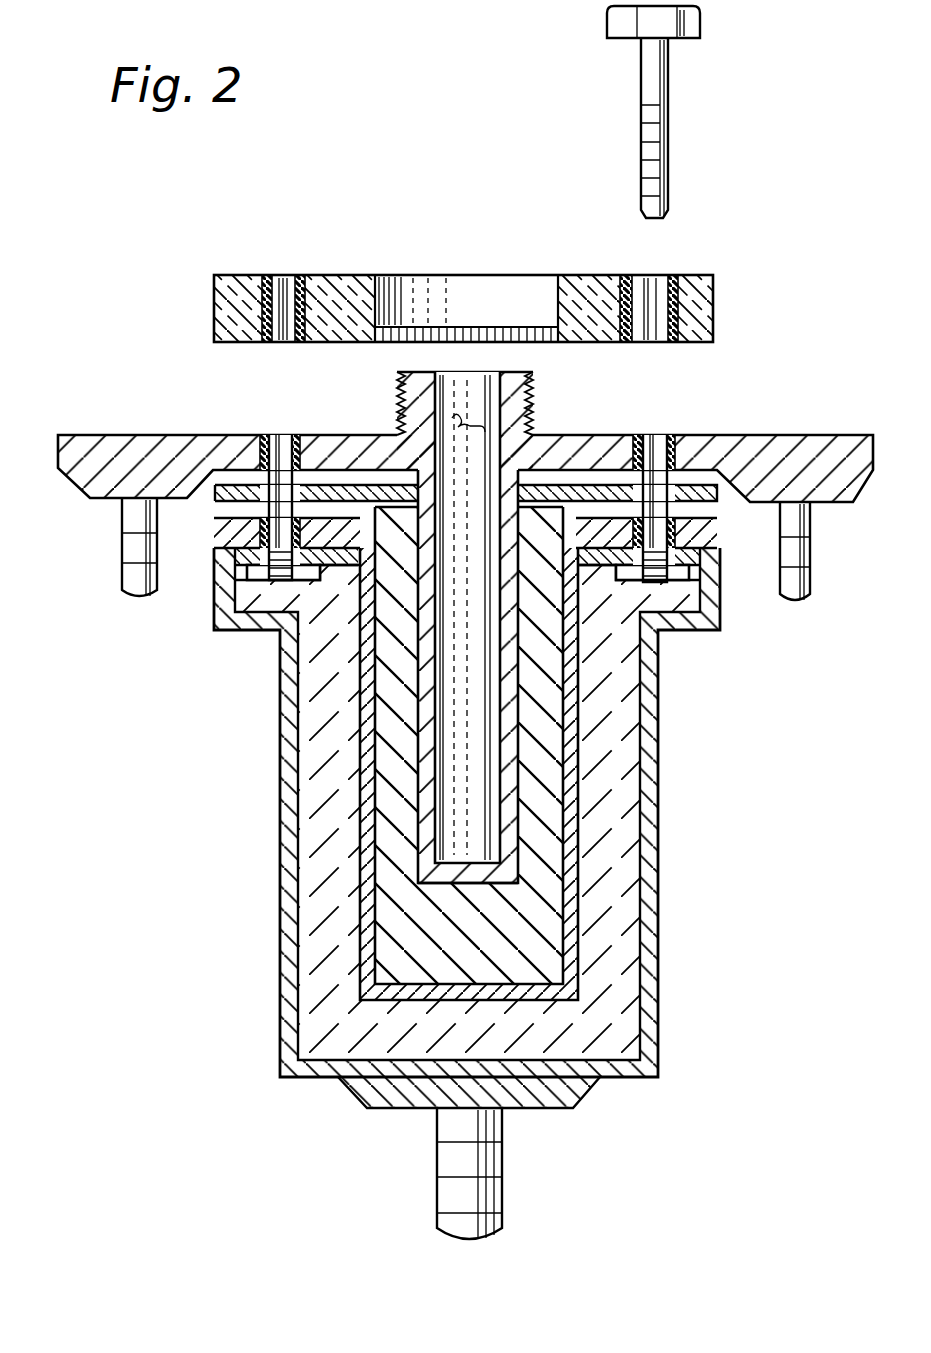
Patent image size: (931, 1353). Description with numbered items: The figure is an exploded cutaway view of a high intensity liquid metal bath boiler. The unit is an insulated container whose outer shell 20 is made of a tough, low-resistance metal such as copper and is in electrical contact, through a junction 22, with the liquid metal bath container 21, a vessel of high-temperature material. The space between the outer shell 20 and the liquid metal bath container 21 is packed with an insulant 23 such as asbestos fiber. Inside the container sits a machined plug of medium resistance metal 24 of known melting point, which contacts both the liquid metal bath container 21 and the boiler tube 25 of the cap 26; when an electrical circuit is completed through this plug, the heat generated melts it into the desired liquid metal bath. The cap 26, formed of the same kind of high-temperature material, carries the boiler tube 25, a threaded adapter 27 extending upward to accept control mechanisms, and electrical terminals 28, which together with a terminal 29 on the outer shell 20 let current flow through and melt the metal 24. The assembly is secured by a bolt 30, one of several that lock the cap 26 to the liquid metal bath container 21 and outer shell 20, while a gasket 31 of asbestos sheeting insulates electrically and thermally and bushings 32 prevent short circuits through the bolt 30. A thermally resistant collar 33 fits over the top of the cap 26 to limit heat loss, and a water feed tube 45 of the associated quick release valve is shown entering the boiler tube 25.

The outer shell 20 is at (655, 1045).
The liquid metal bath container 21 is at (360, 937).
The junction 22 is at (214, 552).
The insulant 23 is at (632, 748).
The medium resistance metal 24 is at (555, 965).
The boiler tube 25 is at (505, 850).
The cap 26 is at (206, 433).
The threaded adapter 27 is at (533, 412).
The electrical terminals 28 is at (122, 552).
The terminal 29 is at (502, 1177).
The bolt 30 is at (670, 97).
The gasket 31 is at (717, 503).
The bushings 32 is at (672, 437).
The thermally resistant collar 33 is at (715, 318).
The water feed tube 45 is at (425, 424).